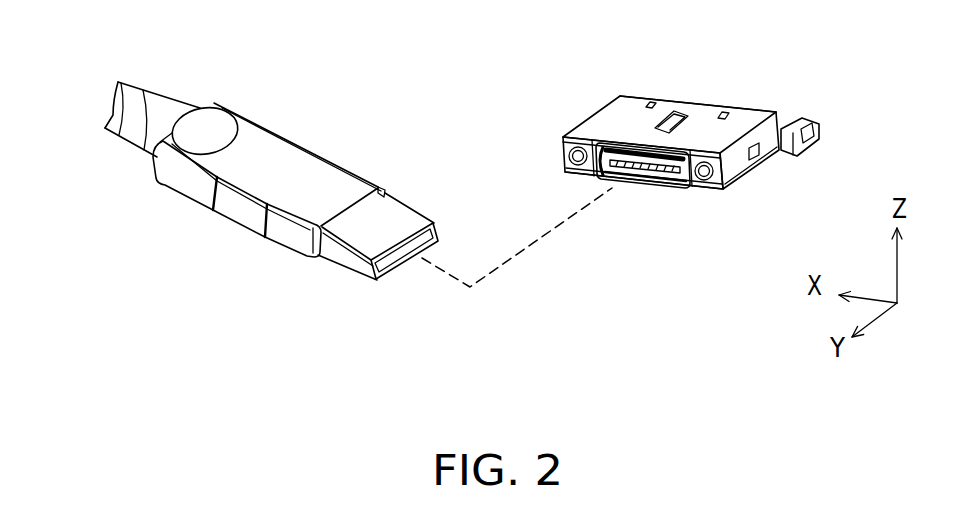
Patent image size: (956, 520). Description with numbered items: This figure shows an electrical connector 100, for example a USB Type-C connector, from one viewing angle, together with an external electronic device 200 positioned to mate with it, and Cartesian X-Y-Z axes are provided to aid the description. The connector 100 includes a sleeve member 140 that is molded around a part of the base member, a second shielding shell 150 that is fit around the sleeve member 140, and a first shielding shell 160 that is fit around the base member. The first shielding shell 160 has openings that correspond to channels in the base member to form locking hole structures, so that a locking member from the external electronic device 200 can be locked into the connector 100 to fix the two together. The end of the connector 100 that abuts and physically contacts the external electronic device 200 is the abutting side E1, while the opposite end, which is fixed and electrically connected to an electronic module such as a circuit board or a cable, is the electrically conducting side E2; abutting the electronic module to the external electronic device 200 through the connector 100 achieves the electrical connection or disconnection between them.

The electrical connector 100 is at (828, 421).
The sleeve member 140 is at (646, 170).
The second shielding shell 150 is at (600, 170).
The first shielding shell 160 is at (758, 174).
The external electronic device 200 is at (369, 101).
The abutting side E1 is at (687, 207).
The electrically conducting side E2 is at (775, 90).